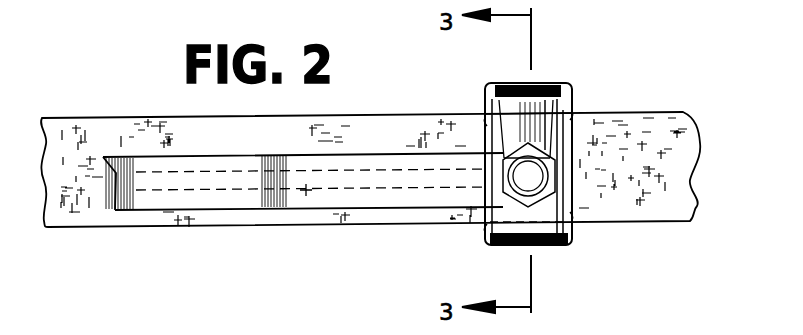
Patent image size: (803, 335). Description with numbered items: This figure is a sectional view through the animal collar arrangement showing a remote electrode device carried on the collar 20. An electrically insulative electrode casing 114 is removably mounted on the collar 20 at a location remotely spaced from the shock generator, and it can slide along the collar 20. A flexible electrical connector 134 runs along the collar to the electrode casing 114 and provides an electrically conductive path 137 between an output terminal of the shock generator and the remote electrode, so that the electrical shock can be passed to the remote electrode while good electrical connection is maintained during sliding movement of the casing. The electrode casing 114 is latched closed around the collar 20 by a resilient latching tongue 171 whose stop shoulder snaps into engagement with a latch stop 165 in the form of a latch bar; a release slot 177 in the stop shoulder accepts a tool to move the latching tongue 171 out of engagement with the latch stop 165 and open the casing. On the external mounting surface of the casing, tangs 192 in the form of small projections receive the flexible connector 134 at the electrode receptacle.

The animal collar 20 is at (663, 113).
The electrode casing 114 is at (478, 93).
The flexible electrical connector 134 is at (216, 220).
The electrically conductive path 137 is at (308, 194).
The latch stop 165 is at (520, 100).
The latching tongue 171 is at (520, 98).
The release slot 177 is at (550, 100).
The tangs 192 is at (487, 120).